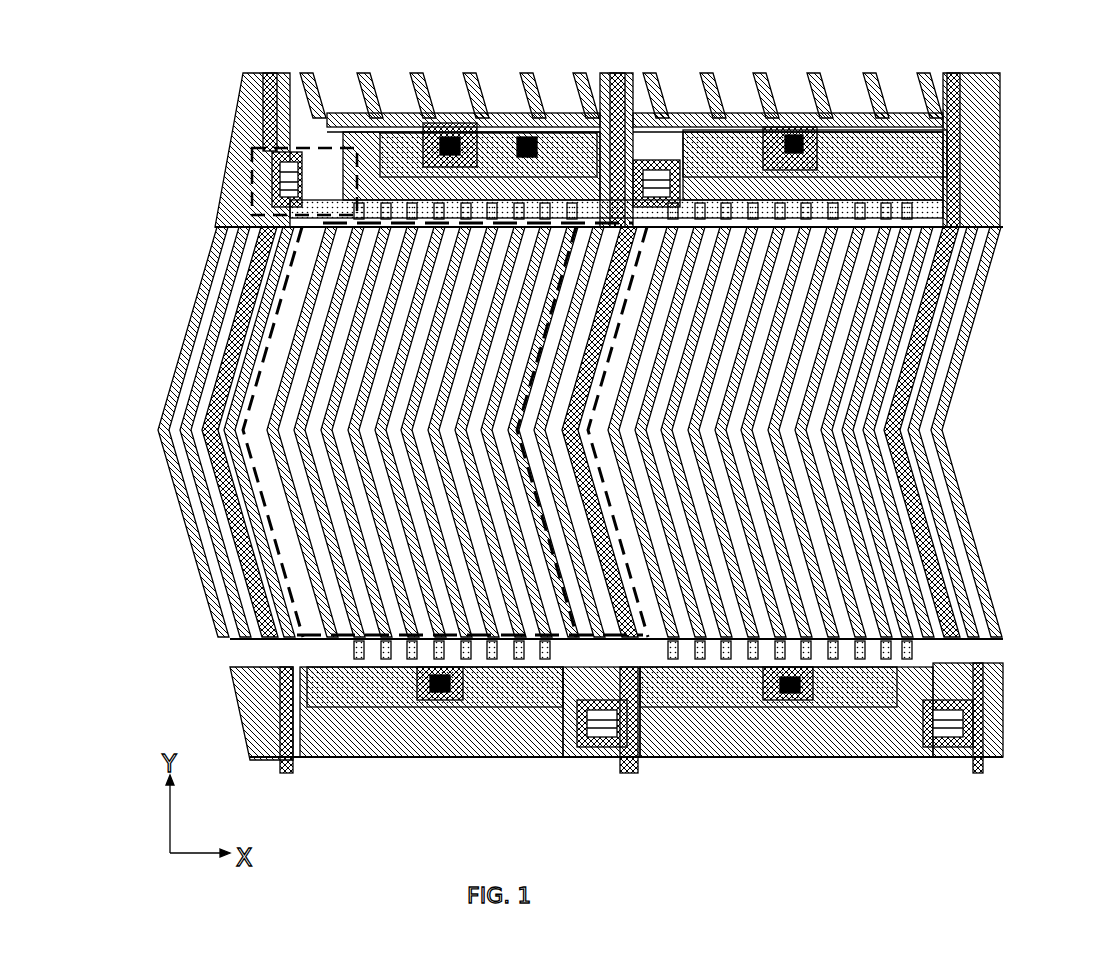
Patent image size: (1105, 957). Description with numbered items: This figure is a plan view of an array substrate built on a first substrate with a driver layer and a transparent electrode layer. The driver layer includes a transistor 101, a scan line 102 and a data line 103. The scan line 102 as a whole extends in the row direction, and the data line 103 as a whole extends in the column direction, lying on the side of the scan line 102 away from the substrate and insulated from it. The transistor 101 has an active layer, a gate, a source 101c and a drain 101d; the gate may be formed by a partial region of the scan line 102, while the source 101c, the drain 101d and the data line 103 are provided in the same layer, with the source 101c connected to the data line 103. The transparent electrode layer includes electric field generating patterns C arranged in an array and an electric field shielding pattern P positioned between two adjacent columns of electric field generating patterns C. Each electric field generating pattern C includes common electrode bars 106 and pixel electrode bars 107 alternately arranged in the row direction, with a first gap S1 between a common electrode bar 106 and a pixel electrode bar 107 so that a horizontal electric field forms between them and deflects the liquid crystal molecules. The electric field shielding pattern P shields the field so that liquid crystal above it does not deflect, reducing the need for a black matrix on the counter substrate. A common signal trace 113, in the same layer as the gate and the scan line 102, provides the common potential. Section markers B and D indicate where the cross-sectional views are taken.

The transistor 101 is at (290, 132).
The source 101c is at (297, 170).
The drain 101d is at (358, 118).
The scan line 102 is at (1000, 180).
The data line 103 is at (640, 773).
The common electrode bar 106 is at (295, 335).
The pixel electrode bar 107 is at (310, 388).
The common signal trace 113 is at (1000, 127).
The first gap S1 is at (318, 302).
The electric field shielding pattern P is at (575, 640).
The section line B- B is at (400, 113).
The electric field generating pattern C is at (352, 633).
The section line D- D is at (485, 490).